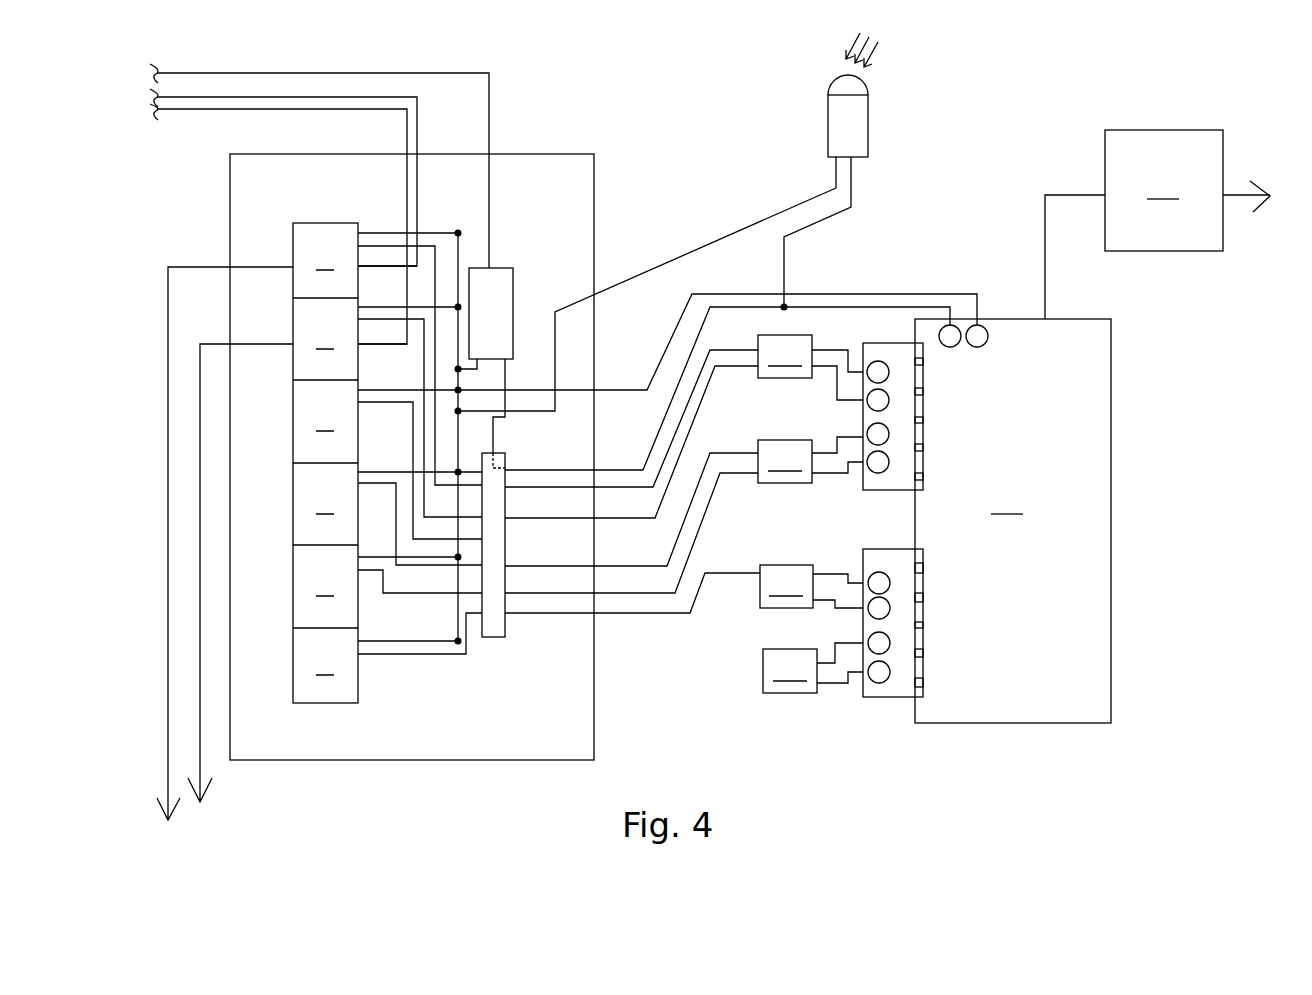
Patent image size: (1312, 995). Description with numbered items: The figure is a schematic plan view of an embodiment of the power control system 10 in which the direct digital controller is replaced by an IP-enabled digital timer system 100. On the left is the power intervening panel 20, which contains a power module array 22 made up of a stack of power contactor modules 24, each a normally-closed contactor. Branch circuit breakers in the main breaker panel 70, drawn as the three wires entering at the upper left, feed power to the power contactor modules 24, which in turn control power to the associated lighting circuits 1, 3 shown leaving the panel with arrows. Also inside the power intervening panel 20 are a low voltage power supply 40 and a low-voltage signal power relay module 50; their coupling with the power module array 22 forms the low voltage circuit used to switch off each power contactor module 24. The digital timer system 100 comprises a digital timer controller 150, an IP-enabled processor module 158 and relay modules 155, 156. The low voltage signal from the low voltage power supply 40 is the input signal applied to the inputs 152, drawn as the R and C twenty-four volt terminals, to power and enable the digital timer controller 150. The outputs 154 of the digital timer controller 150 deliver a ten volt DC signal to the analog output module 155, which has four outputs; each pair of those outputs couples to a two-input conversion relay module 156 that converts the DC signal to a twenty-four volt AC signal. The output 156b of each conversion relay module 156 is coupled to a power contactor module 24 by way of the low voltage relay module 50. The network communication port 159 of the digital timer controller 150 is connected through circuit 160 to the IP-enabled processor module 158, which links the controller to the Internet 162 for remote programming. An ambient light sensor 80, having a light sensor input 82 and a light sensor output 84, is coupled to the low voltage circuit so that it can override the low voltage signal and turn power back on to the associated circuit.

The lighting circuit 1 is at (167, 690).
The lighting circuit 3 is at (198, 720).
The power control system 10 is at (703, 170).
The power intervening panel 20 is at (524, 154).
The power module array 22 is at (318, 440).
The power contactor module 24 is at (325, 463).
The low voltage power supply 40 is at (513, 318).
The low-voltage signal power relay module 50 is at (498, 458).
The main breaker panel 70 is at (284, 204).
The ambient light sensor 80 is at (847, 170).
The light sensor input 82 is at (853, 160).
The light sensor output 84 is at (835, 160).
The digital timer system 100 is at (1146, 430).
The digital timer controller 150 is at (981, 501).
The inputs 152 is at (960, 345).
The outputs 154 is at (924, 476).
The analog output module 155 is at (890, 492).
The conversion relay module 156 is at (800, 514).
The output of conversion relay module 156b is at (757, 350).
The IP-enabled processor module 158 is at (1164, 190).
The network communication port 159 is at (1047, 318).
The circuit 160 is at (1067, 193).
The Internet 162 is at (1240, 193).